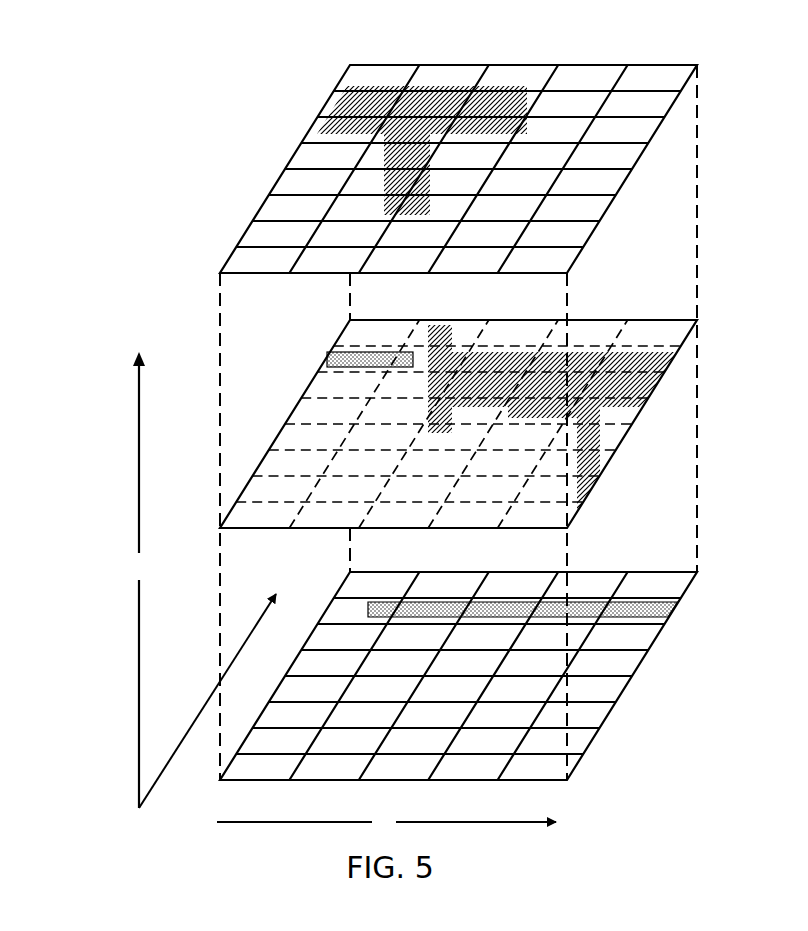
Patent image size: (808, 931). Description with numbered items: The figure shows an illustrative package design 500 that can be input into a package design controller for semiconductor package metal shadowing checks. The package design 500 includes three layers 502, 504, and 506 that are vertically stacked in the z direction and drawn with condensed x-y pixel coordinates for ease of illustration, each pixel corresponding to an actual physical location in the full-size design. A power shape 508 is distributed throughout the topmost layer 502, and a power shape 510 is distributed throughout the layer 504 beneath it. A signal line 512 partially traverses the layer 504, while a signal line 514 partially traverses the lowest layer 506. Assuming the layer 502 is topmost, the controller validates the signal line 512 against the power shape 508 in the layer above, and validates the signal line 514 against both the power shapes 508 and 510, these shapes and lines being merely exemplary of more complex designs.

The package design 500 is at (196, 76).
The layer 502 is at (657, 64).
The layer 504 is at (657, 319).
The layer 506 is at (657, 570).
The power shape 508 is at (345, 117).
The power shape 510 is at (655, 383).
The signal line 512 is at (342, 362).
The signal line 514 is at (667, 615).